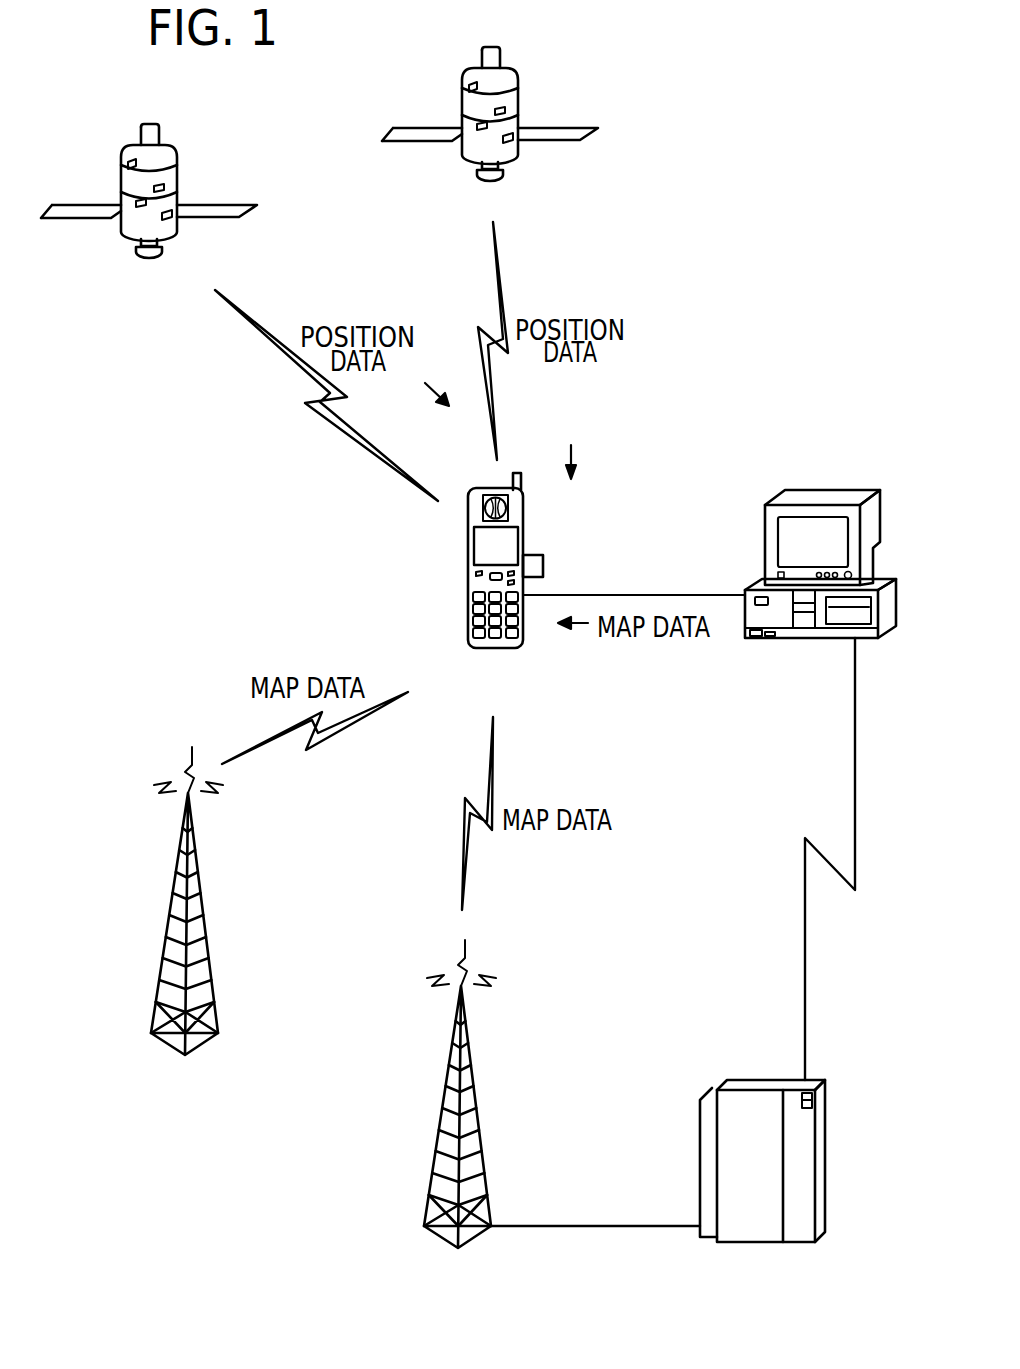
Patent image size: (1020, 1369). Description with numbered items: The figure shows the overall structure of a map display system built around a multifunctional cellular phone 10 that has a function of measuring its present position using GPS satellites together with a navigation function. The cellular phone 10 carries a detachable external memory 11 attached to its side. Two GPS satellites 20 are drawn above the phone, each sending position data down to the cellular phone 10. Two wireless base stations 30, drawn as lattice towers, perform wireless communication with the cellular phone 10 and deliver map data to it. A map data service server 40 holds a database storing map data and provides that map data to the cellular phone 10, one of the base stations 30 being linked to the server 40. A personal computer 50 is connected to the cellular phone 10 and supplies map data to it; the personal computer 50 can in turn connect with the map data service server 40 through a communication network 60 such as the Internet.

The multifunctional cellular phone 10 is at (468, 556).
The detachable external memory 11 is at (532, 553).
The GPS satellites 20 is at (518, 110).
The wireless base stations 30 is at (197, 907).
The map data service server 40 is at (742, 1080).
The personal computer 50 is at (818, 488).
The communication network 60 is at (855, 763).